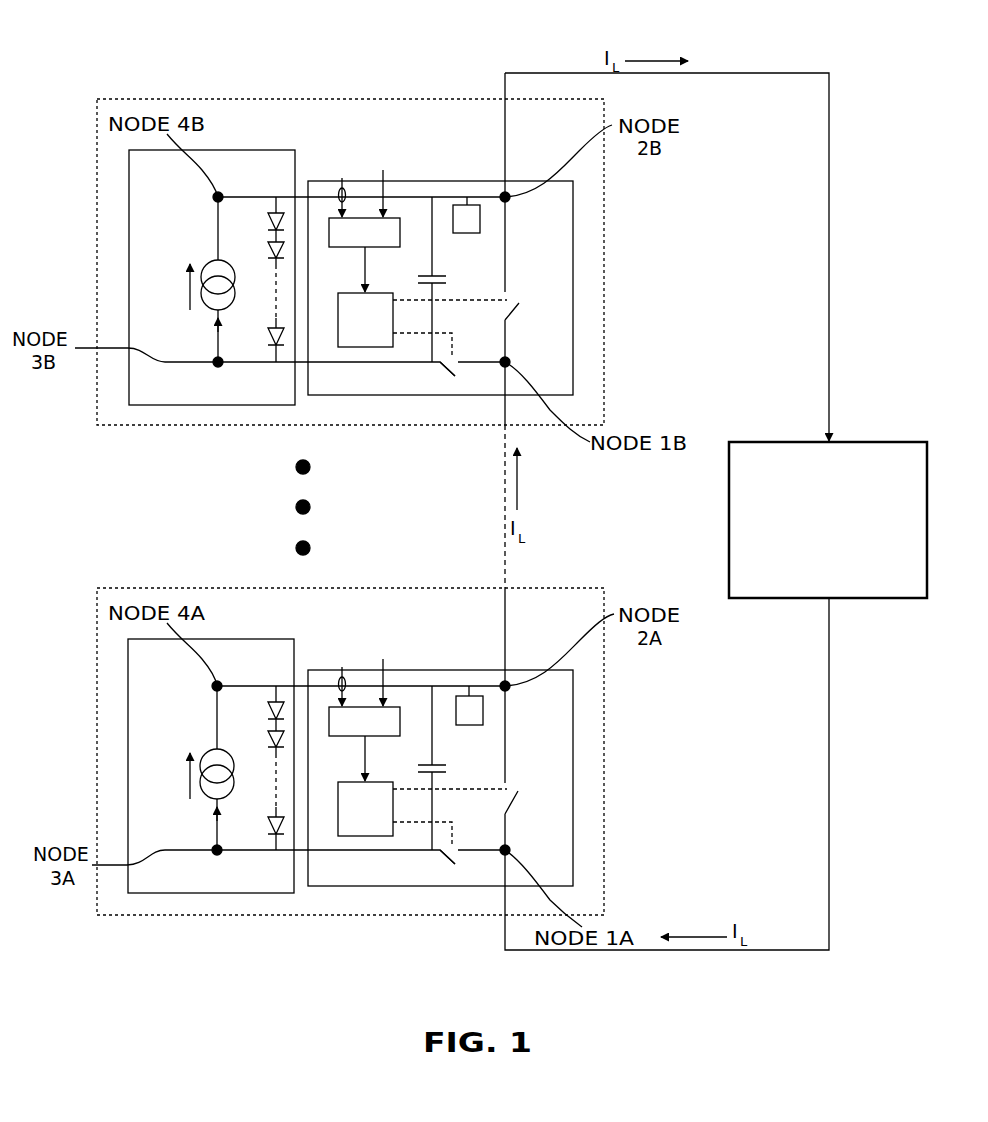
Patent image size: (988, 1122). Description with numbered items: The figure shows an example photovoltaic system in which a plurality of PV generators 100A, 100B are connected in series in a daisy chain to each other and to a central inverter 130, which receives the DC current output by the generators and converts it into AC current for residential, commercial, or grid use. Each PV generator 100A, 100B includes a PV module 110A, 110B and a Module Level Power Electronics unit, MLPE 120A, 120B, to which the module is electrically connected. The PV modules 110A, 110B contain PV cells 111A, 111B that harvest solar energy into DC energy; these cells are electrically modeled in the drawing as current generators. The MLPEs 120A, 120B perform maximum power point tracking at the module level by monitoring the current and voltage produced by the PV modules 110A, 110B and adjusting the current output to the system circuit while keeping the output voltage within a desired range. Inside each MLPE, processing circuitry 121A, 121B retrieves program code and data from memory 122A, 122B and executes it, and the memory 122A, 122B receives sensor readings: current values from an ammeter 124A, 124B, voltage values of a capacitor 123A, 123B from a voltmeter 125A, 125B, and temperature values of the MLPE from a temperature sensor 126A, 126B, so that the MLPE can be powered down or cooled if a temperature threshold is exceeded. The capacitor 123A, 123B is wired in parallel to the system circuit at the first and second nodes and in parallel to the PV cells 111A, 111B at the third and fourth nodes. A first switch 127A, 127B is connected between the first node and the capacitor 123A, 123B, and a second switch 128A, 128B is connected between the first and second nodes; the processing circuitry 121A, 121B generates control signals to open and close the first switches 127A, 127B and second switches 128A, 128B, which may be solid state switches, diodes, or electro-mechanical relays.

The PV generator 100B is at (190, 99).
The PV generator 100A is at (190, 588).
The PV module 110B is at (129, 405).
The PV module 110A is at (128, 812).
The PV cells 111B is at (187, 297).
The PV cells 111A is at (187, 772).
The Module Level Power Electronics (MLPE) 120B is at (573, 237).
The Module Level Power Electronics (MLPE) 120A is at (573, 838).
The processing circuitry 121B is at (355, 293).
The processing circuitry 121A is at (355, 782).
The memory 122B is at (400, 238).
The memory 122A is at (337, 707).
The capacitor 123B is at (420, 279).
The capacitor 123A is at (420, 768).
The ammeter 124B is at (342, 178).
The ammeter 124A is at (342, 667).
The voltmeter 125B is at (383, 170).
The voltmeter 125A is at (383, 659).
The temperature sensor 126B is at (468, 204).
The temperature sensor 126A is at (468, 696).
The first switch 127B is at (458, 358).
The first switch 127A is at (458, 848).
The second switch 128B is at (518, 293).
The second switch 128A is at (518, 791).
The inverter 130 is at (873, 442).